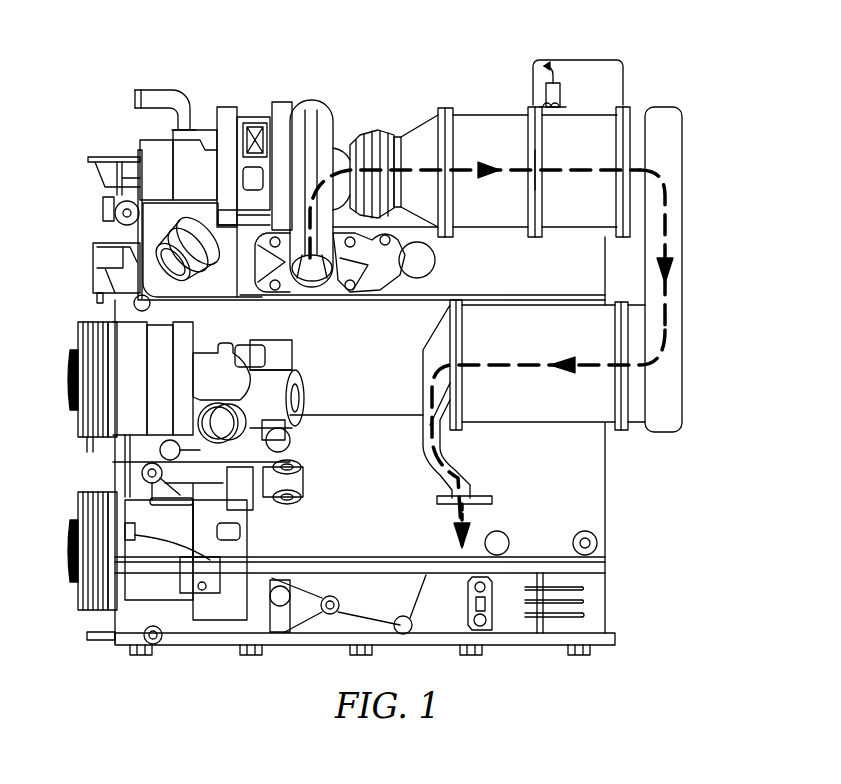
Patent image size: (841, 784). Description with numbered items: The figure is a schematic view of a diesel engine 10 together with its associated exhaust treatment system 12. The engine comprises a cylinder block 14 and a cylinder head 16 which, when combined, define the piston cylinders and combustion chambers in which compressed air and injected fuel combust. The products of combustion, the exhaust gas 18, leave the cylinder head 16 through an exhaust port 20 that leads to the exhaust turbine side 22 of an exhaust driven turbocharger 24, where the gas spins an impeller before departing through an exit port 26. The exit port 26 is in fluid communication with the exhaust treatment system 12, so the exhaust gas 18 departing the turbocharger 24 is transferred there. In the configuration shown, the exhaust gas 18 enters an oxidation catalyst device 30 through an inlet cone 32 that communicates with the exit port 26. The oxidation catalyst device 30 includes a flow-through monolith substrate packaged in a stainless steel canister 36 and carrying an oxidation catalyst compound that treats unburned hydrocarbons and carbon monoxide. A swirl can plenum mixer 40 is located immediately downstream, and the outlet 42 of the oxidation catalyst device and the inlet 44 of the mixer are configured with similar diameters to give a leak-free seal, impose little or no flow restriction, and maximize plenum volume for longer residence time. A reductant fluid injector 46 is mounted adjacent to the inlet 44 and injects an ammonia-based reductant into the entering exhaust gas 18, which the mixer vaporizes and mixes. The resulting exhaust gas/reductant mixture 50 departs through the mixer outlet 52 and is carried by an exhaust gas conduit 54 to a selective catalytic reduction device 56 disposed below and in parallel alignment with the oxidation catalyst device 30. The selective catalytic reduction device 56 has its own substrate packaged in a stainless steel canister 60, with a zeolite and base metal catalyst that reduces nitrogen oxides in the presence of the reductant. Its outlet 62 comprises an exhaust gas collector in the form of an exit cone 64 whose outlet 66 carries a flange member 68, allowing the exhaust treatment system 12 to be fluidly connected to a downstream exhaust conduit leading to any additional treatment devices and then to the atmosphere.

The diesel engine 10 is at (100, 70).
The exhaust treatment system 12 is at (688, 268).
The cylinder block 14 is at (583, 595).
The cylinder head 16 is at (95, 255).
The exhaust gas 18 is at (497, 178).
The exhaust port 20 is at (262, 262).
The exhaust turbine side 22 is at (310, 105).
The exhaust driven turbocharger 24 is at (278, 95).
The exit port 26 is at (378, 133).
The oxidation catalyst device 30 is at (478, 95).
The inlet cone 32 is at (422, 130).
The canister 36 is at (566, 150).
The swirl can plenum mixer 40 is at (578, 55).
The outlet 42 is at (537, 158).
The inlet 44 is at (533, 140).
The reductant fluid injector 46 is at (562, 97).
The exhaust gas/reductant mixture 50 is at (667, 218).
The mixer outlet 52 is at (630, 160).
The exhaust gas conduit 54 is at (684, 230).
The selective catalytic reduction device 56 is at (551, 351).
The canister 60 is at (594, 397).
The outlet 62 is at (460, 383).
The exit cone 64 is at (425, 375).
The outlet 66 is at (445, 506).
The flange member 68 is at (440, 497).